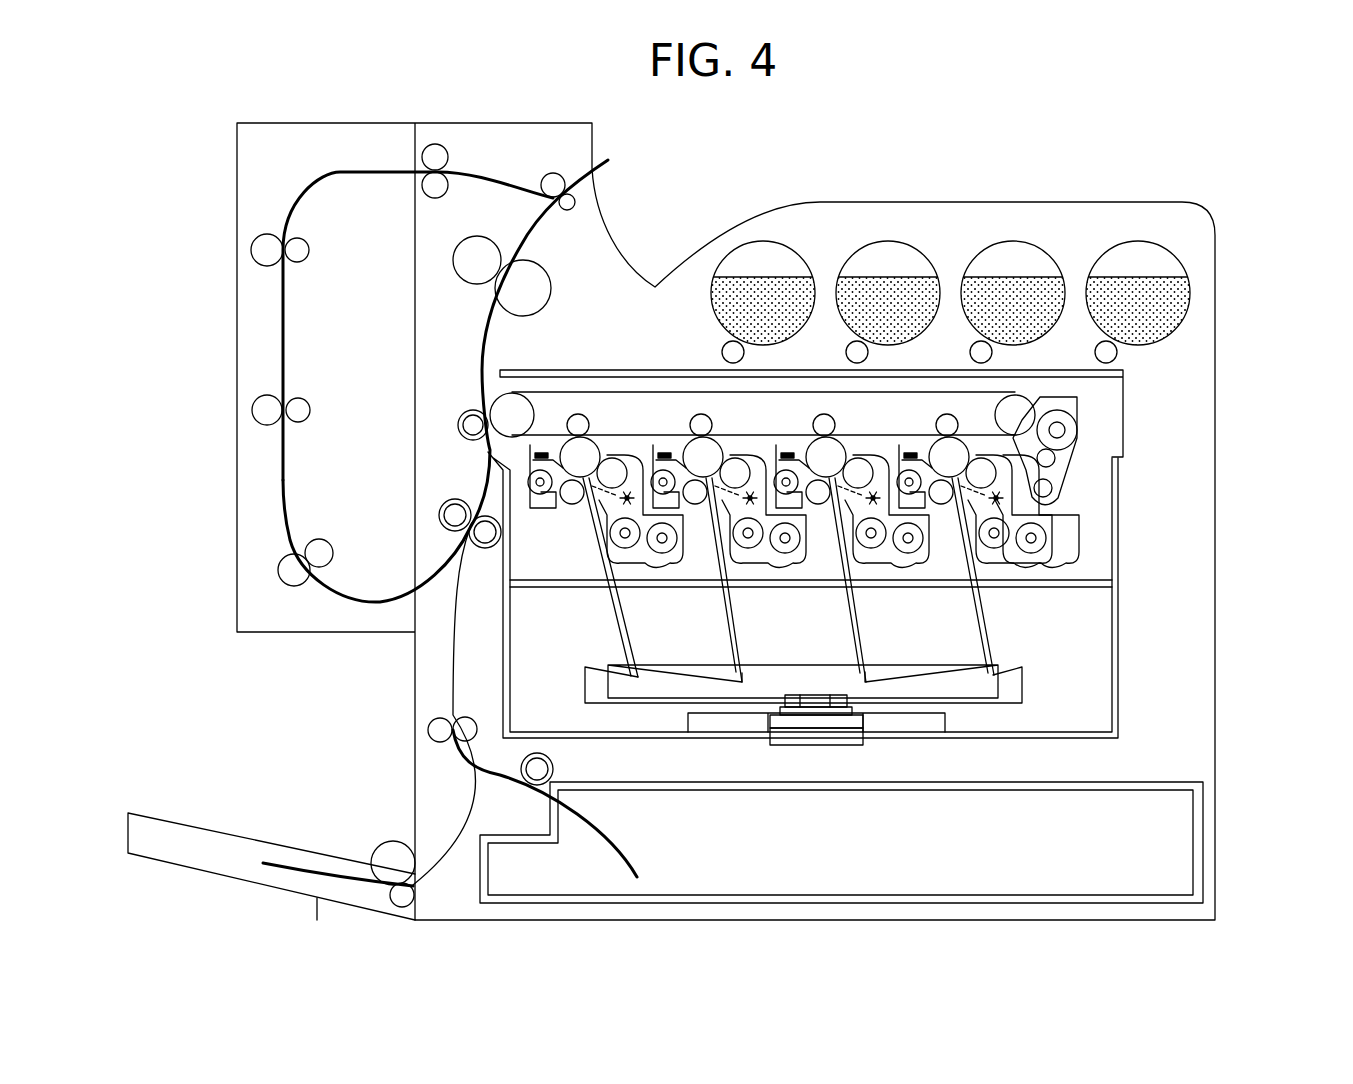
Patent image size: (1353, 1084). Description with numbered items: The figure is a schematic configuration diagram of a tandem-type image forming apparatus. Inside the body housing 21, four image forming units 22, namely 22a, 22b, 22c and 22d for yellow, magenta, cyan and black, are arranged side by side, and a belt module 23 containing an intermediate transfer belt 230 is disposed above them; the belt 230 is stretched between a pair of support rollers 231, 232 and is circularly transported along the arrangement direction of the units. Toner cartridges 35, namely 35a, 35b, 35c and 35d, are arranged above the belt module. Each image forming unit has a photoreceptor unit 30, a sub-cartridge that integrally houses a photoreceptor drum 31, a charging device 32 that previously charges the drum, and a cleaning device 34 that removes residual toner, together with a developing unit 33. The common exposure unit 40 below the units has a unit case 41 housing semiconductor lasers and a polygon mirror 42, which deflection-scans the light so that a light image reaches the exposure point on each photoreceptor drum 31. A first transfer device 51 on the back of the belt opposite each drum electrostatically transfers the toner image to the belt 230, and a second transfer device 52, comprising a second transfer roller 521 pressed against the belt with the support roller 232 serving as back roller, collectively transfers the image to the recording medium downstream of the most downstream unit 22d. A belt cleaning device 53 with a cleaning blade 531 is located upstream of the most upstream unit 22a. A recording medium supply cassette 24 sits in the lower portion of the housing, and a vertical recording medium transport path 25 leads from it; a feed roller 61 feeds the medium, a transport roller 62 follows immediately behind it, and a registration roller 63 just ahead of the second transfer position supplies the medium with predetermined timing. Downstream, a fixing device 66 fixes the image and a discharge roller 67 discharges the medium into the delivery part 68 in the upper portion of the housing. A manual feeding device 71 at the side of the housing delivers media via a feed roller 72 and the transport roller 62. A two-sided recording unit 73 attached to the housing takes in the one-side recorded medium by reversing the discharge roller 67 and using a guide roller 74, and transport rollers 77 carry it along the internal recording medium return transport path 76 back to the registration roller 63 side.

The body housing 21 is at (1217, 560).
The image forming unit 22 is at (844, 537).
The image forming unit 22a is at (1009, 565).
The image forming unit 22b is at (886, 565).
The image forming unit 22c is at (763, 565).
The image forming unit 22d is at (844, 534).
The belt module 23 is at (692, 386).
The recording medium supply cassette 24 is at (800, 904).
The recording medium transport path 25 is at (453, 680).
The photoreceptor unit 30 is at (558, 513).
The photoreceptor drum 31 is at (534, 497).
The charging device 32 is at (574, 498).
The developing unit 33 is at (1057, 540).
The cleaning device 34 is at (541, 452).
The toner cartridge 35 is at (964, 252).
The toner cartridge 35a is at (1150, 243).
The toner cartridge 35b is at (1018, 243).
The toner cartridge 35c is at (905, 243).
The toner cartridge 35d is at (783, 243).
The exposure unit 40 is at (1096, 690).
The unit case 41 is at (1035, 740).
The polygon mirror 42 is at (820, 695).
The first transfer device 51 is at (589, 425).
The second transfer device 52 is at (400, 444).
The belt cleaning device 53 is at (1077, 448).
The feed roller 61 is at (553, 769).
The transport roller 62 is at (428, 730).
The registration roller 63 is at (440, 516).
The fixing device 66 is at (453, 262).
The discharge roller 67 is at (542, 179).
The delivery part 68 is at (851, 202).
The manual feeding device 71 is at (222, 818).
The feed roller 72 is at (375, 848).
The two-sided recording unit 73 is at (384, 335).
The guide roller 74 is at (437, 145).
The internal recording medium return transport path 76 is at (283, 297).
The transport roller 77 is at (252, 250).
The intermediate transfer belt 230 is at (597, 370).
The support roller 231 is at (1022, 400).
The support roller 232 is at (497, 393).
The second transfer roller 521 is at (458, 425).
The cleaning blade 531 is at (1047, 486).